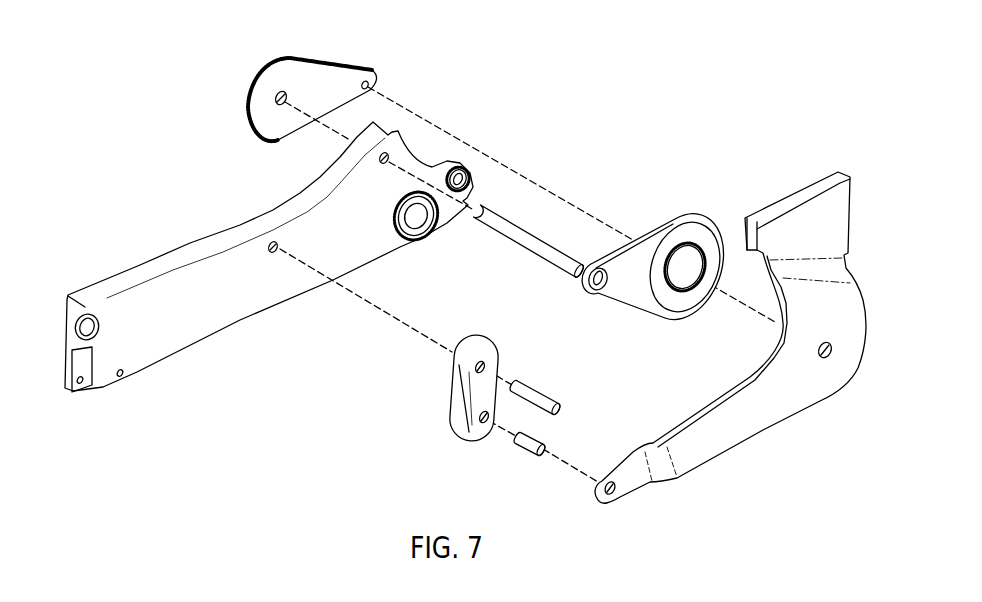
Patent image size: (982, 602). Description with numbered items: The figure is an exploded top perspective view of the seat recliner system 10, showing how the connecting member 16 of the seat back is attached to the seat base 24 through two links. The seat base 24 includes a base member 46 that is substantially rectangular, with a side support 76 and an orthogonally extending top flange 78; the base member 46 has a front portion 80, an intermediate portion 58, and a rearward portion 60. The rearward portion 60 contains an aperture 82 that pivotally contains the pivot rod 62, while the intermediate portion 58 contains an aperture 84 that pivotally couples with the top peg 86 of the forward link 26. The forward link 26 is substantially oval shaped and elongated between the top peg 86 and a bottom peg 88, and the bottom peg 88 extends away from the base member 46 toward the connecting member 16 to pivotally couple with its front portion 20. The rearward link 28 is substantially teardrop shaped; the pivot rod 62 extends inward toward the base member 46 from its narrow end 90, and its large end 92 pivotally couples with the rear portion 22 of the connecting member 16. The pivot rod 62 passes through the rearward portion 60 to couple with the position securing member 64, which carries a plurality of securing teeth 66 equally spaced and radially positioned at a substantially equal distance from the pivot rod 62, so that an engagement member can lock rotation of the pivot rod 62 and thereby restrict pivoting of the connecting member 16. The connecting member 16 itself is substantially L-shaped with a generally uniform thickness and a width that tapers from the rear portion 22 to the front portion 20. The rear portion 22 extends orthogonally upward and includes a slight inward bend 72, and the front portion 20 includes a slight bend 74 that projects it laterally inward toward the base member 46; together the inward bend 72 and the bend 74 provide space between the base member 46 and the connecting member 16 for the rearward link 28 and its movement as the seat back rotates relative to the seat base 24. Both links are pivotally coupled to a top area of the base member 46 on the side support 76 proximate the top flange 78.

The seat recliner system 10 is at (137, 81).
The connecting member 16 is at (743, 420).
The front portion 20 is at (627, 483).
The rear portion 22 is at (822, 297).
The seat base 24 is at (177, 200).
The forward link 26 is at (462, 402).
The rearward link 28 is at (632, 285).
The base member 46 is at (210, 267).
The intermediate portion 58 is at (245, 263).
The rearward portion 60 is at (360, 200).
The pivot rod 62 is at (510, 243).
The position securing member 64 is at (323, 78).
The securing teeth 66 is at (253, 83).
The inward bend 72 is at (815, 270).
The bend 74 is at (660, 470).
The side support 76 is at (158, 287).
The top flange 78 is at (123, 282).
The front portion 80 is at (117, 330).
The aperture 82 is at (391, 159).
The aperture 84 is at (280, 253).
The top peg 86 is at (553, 390).
The bottom peg 88 is at (525, 448).
The narrow end 90 is at (583, 287).
The large end 92 is at (716, 226).